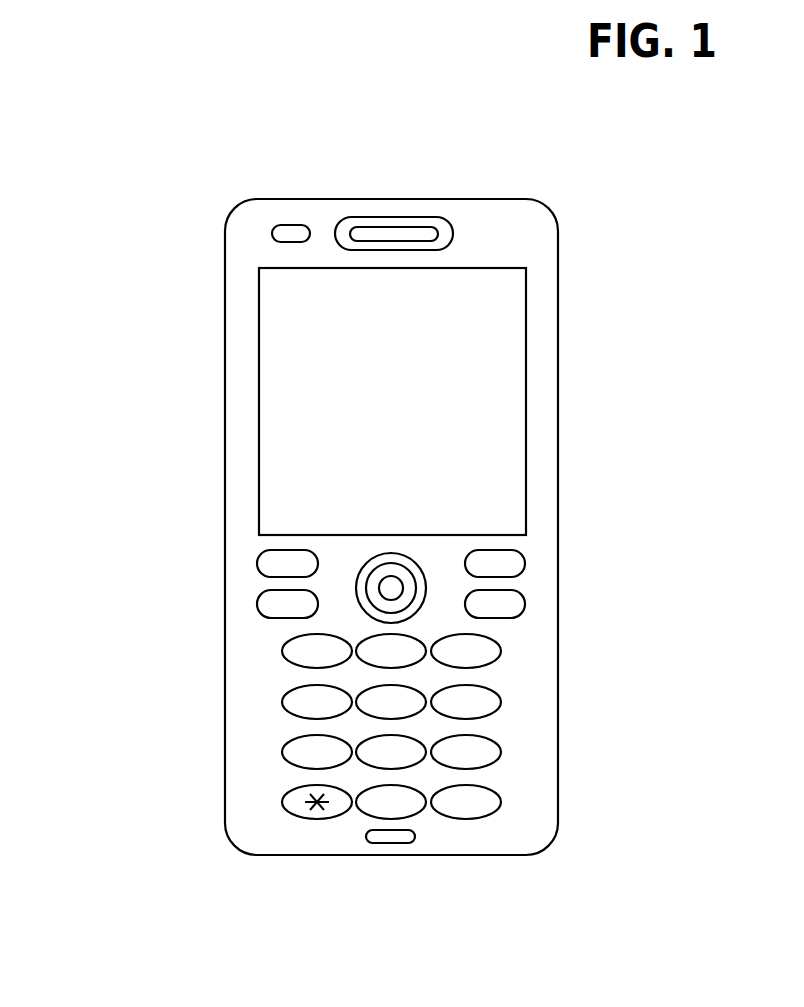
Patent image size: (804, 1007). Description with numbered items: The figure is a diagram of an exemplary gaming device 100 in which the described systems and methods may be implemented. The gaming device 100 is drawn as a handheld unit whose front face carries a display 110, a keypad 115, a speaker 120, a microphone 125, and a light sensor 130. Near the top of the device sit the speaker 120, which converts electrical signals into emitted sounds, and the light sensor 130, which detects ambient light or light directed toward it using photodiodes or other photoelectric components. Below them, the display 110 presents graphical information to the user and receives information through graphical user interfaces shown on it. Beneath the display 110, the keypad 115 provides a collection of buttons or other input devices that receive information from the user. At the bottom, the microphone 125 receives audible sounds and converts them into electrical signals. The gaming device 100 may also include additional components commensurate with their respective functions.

The gaming device 100 is at (208, 286).
The display 110 is at (487, 443).
The keypad 115 is at (286, 687).
The speaker 120 is at (384, 220).
The microphone 125 is at (393, 846).
The light sensor 130 is at (295, 231).